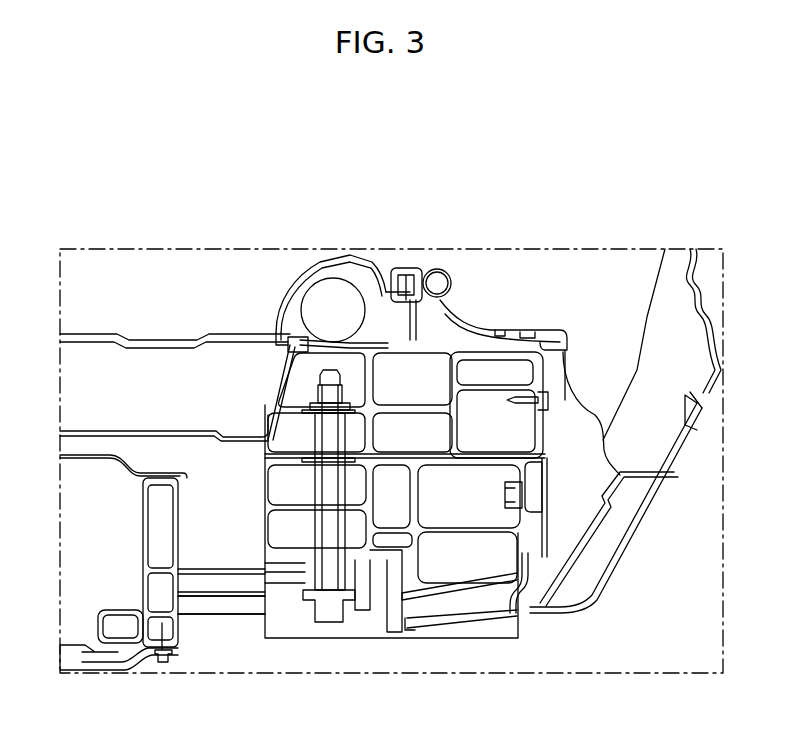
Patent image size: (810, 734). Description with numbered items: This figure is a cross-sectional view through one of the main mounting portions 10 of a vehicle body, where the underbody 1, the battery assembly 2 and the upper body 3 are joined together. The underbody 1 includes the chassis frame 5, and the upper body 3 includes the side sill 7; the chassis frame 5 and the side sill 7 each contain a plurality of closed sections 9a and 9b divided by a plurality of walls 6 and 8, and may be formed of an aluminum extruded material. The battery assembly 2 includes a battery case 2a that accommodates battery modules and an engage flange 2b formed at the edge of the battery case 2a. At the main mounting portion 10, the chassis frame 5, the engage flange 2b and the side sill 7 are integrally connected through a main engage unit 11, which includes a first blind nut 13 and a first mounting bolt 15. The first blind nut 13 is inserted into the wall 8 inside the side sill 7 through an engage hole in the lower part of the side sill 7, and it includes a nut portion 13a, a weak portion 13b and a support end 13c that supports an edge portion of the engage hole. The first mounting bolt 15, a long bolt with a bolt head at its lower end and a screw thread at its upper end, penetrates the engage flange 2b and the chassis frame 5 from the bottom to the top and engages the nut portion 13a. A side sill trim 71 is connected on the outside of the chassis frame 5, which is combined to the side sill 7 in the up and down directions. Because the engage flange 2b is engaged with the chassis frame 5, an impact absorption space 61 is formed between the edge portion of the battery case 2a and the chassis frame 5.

The main mounting portion 10 is at (201, 209).
The side sill 7 is at (349, 270).
The wall 8 is at (362, 368).
The closed section 9b is at (386, 358).
The main engage unit 11 is at (352, 433).
The nut portion 13a is at (280, 375).
The upper body 3 is at (276, 380).
The weak portion 13b is at (318, 386).
The support end 13c is at (298, 420).
The first blind nut 13 is at (284, 447).
The underbody 1 is at (258, 500).
The battery assembly 2 is at (140, 577).
The battery case 2a is at (98, 625).
The impact absorption space 61 is at (225, 553).
The engage flange 2b is at (248, 590).
The first mounting bolt 15 is at (333, 618).
The wall 6 is at (360, 512).
The closed section 9a is at (444, 500).
The chassis frame 5 is at (451, 584).
The side sill trim 71 is at (545, 505).